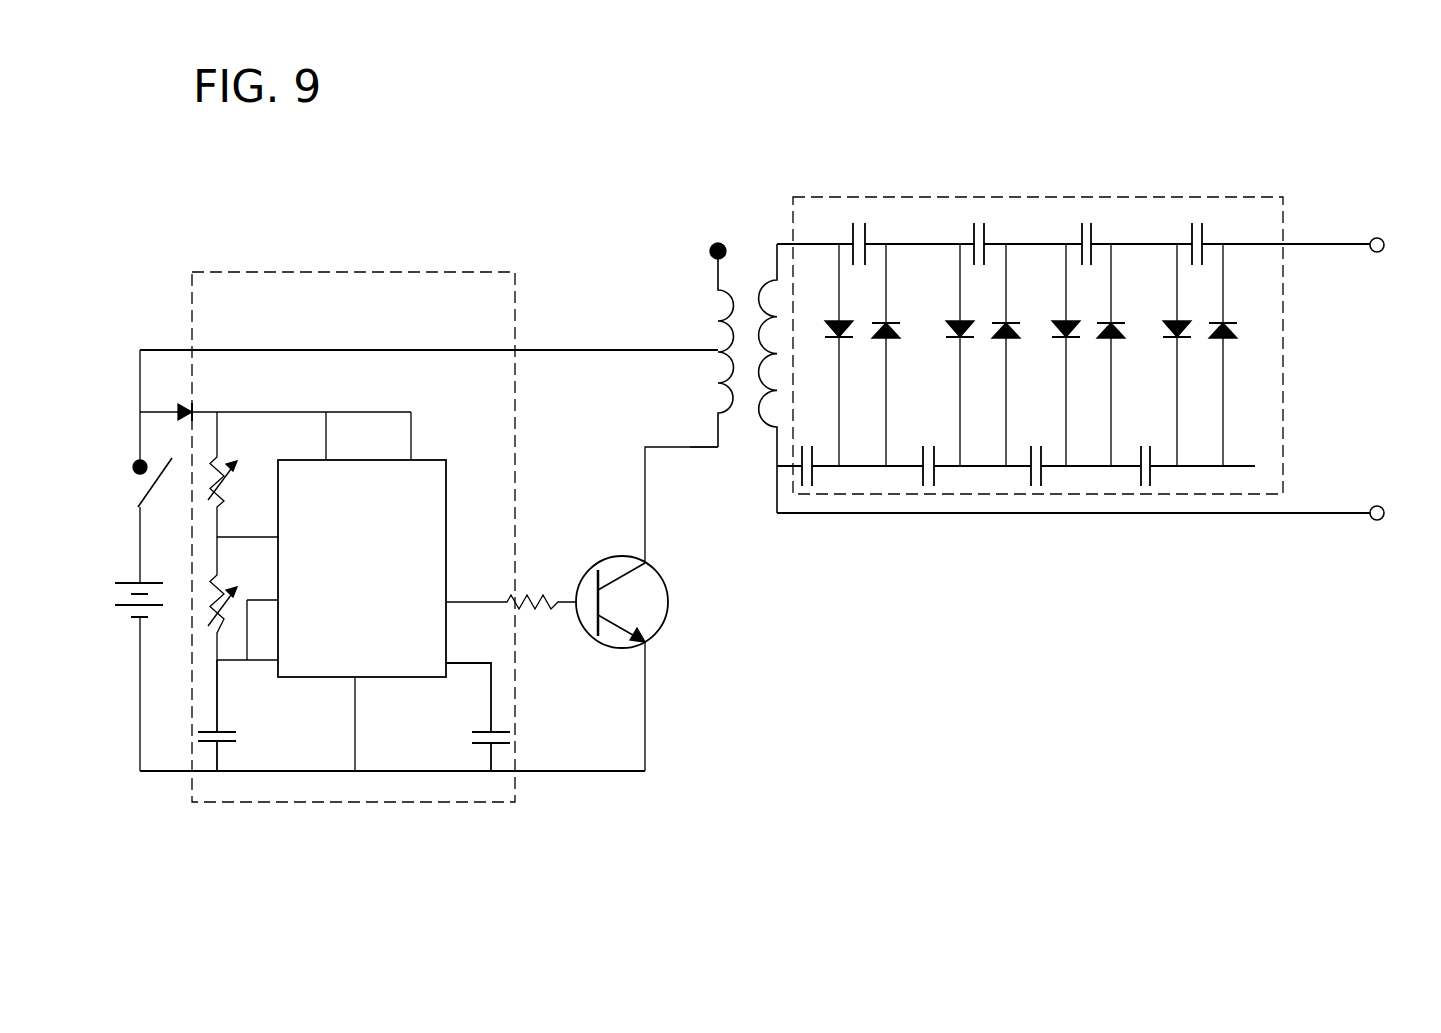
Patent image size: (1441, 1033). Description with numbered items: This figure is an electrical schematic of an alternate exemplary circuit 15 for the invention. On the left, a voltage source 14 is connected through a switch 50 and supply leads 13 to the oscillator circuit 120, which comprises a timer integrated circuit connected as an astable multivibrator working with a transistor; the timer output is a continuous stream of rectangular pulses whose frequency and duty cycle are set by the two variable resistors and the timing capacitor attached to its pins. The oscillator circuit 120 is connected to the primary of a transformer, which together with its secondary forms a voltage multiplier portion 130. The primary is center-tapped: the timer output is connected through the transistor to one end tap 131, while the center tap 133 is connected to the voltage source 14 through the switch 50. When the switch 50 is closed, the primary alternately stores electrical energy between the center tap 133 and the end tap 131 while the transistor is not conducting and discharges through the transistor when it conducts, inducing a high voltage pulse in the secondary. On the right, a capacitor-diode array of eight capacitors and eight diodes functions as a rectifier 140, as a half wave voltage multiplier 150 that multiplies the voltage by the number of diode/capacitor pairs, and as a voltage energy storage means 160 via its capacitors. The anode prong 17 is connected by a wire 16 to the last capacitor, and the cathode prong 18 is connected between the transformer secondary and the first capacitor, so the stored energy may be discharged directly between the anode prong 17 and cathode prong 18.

The high voltage power supply circuit 15 is at (674, 111).
The battery leads 13 is at (175, 349).
The voltage source 14 is at (129, 610).
The switch 50 is at (139, 483).
The oscillator circuit 120 is at (372, 272).
The voltage multiplier portion 130 is at (742, 243).
The end tap 131 is at (718, 447).
The center tap 133 is at (718, 350).
The rectifier 140 is at (905, 197).
The half wave voltage multiplier 150 is at (1040, 197).
The voltage energy storage means 160 is at (1165, 197).
The wire 16 is at (1358, 244).
The anode prong 17 is at (1384, 240).
The cathode prong 18 is at (1382, 520).